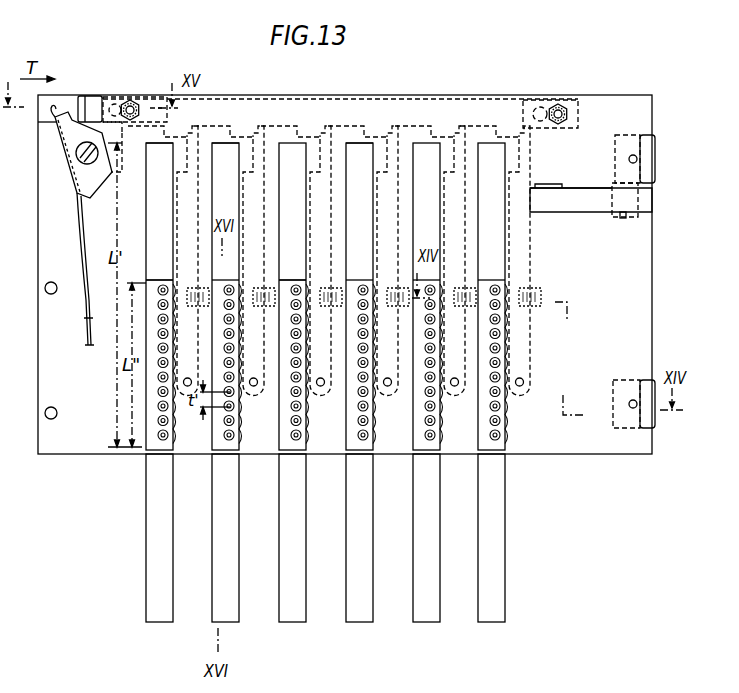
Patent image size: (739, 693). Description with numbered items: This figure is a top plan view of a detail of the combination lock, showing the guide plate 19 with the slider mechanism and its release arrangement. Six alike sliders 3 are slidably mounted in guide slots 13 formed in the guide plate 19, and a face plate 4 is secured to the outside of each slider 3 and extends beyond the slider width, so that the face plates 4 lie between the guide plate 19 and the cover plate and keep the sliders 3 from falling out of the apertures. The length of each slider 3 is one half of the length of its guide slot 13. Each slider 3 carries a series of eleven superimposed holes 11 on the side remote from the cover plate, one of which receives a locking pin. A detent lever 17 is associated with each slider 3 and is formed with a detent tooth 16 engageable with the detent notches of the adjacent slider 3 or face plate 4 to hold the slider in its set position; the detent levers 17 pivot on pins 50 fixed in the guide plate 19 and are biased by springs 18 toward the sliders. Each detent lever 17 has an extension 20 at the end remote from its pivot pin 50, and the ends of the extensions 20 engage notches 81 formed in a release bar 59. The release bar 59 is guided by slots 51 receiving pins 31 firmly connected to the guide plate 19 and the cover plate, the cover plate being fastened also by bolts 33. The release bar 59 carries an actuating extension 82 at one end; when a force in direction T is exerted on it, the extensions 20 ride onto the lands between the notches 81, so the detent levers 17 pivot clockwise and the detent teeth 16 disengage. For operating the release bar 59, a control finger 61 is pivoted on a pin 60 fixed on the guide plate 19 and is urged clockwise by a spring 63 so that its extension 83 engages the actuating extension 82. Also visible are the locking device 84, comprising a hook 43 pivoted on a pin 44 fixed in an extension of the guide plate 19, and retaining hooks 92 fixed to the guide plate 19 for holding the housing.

The slider 3 is at (152, 288).
The face plate 4 is at (225, 549).
The holes 11 is at (358, 408).
The guide slot 13 is at (216, 208).
The detent tooth 16 is at (178, 278).
The detent lever 17 is at (390, 224).
The spring 18 is at (392, 288).
The guide plate 19 is at (653, 300).
The extension 20 is at (257, 130).
The pin 31 is at (130, 99).
The bolt 33 is at (637, 159).
The hook 43 is at (640, 201).
The pin 44 is at (626, 218).
The pivot pin 50 is at (385, 388).
The slot 51 is at (113, 104).
The release bar 59 is at (156, 108).
The pin 60 is at (76, 153).
The control finger 61 is at (88, 182).
The spring 63 is at (80, 208).
The notches 81 is at (216, 127).
The actuating extension 82 is at (82, 97).
The extension 83 is at (53, 115).
The locking device 84 is at (576, 187).
The retaining hook 92 is at (650, 140).